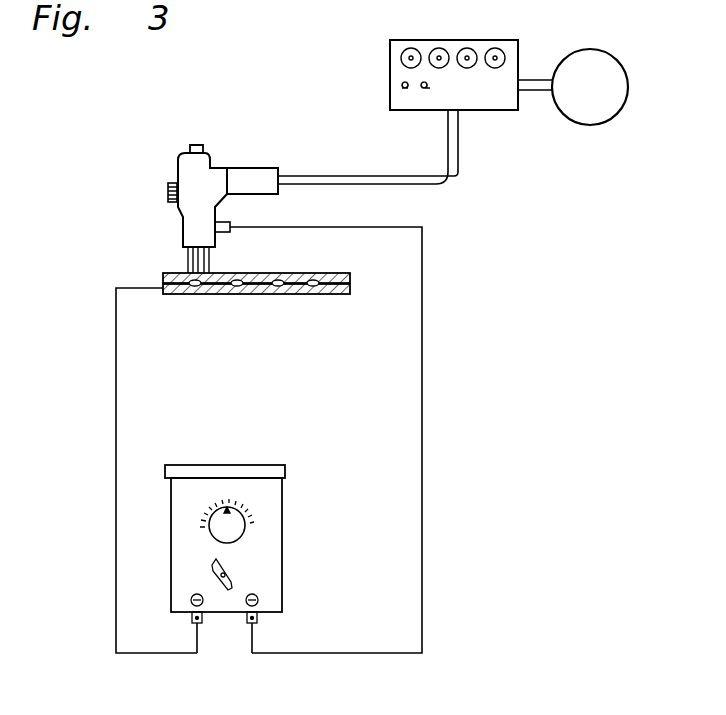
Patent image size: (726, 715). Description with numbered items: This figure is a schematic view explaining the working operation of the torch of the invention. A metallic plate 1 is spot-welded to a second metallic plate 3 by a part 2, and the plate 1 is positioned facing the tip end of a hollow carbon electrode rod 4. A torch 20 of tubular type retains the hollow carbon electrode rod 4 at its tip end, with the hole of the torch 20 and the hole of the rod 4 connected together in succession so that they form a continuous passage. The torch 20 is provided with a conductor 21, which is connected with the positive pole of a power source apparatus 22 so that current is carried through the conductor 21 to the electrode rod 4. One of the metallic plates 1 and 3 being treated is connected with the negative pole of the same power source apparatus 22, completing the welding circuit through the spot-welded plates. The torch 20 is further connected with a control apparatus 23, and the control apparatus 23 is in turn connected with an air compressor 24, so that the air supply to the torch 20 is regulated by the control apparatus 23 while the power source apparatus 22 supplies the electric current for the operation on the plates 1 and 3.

The metallic plate 1 is at (302, 273).
The part 2 is at (237, 288).
The metallic plate 3 is at (297, 289).
The hollow carbon electrode rod 4 is at (190, 260).
The torch 20 is at (268, 172).
The conductor 21 is at (222, 205).
The power source apparatus 22 is at (272, 530).
The control apparatus 23 is at (497, 98).
The air compressor 24 is at (605, 107).